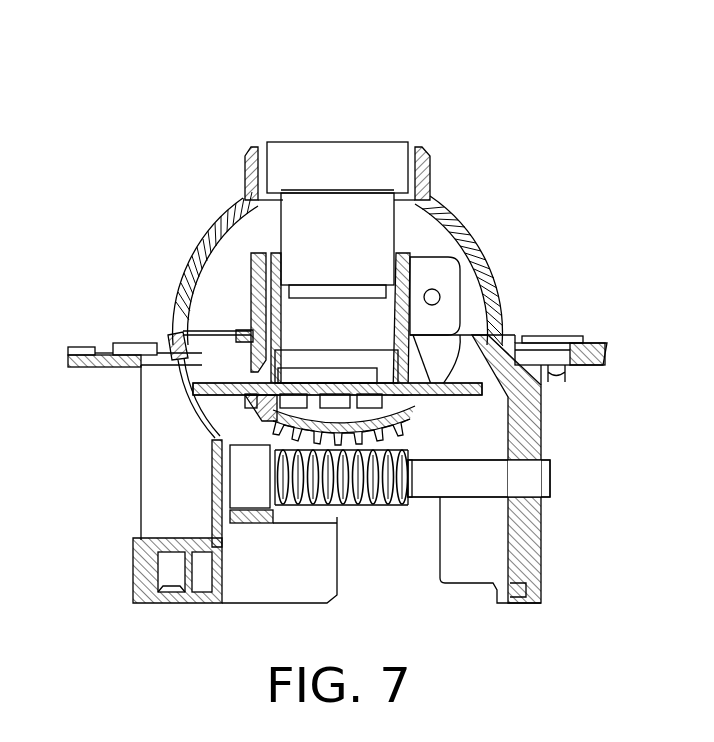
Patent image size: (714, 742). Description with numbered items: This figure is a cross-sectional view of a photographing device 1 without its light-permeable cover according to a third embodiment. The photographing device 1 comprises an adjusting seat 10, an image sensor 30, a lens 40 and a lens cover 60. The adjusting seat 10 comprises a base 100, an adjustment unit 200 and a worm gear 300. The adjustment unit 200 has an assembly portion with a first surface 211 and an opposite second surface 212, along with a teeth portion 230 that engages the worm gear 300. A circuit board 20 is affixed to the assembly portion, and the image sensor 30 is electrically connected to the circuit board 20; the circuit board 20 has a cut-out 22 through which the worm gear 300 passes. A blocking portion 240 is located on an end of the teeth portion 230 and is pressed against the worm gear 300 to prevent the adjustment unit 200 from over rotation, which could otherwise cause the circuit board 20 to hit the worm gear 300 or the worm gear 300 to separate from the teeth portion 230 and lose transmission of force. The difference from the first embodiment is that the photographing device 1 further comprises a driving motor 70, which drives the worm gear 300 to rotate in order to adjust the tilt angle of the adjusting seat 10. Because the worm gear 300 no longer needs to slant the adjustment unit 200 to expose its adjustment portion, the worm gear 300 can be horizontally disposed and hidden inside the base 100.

The photographing device 1 is at (32, 54).
The adjusting seat 10 is at (603, 532).
The circuit board 20 is at (202, 382).
The cut-out 22 is at (439, 388).
The image sensor 30 is at (315, 382).
The lens 40 is at (391, 153).
The lens cover 60 is at (452, 209).
The driving motor 70 is at (240, 493).
The base 100 is at (552, 570).
The adjustment unit 200 is at (253, 407).
The first surface 211 is at (340, 408).
The second surface 212 is at (404, 503).
The teeth portion 230 is at (359, 505).
The blocking portion 240 is at (272, 436).
The worm gear 300 is at (392, 514).